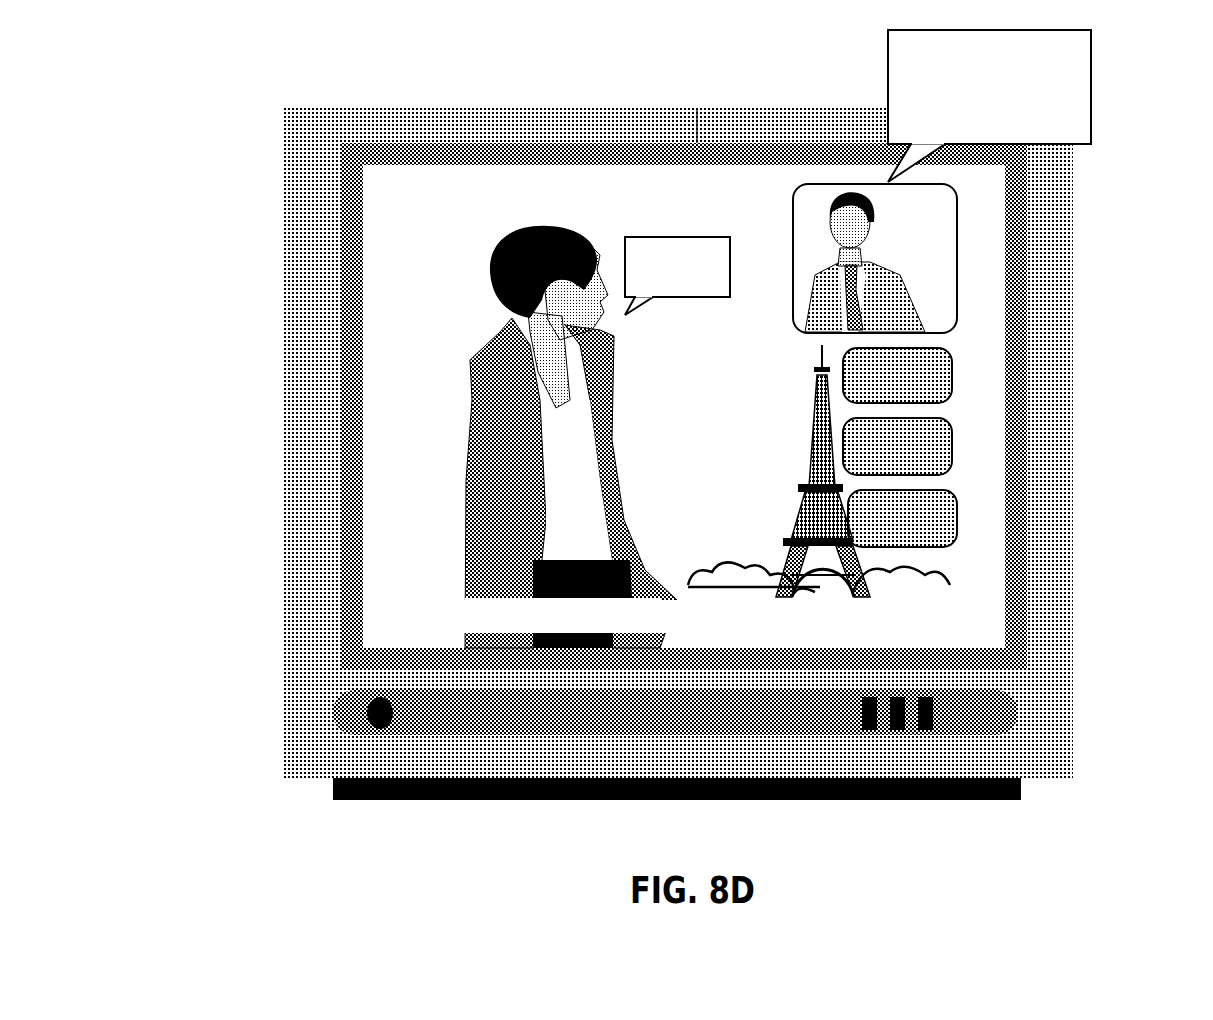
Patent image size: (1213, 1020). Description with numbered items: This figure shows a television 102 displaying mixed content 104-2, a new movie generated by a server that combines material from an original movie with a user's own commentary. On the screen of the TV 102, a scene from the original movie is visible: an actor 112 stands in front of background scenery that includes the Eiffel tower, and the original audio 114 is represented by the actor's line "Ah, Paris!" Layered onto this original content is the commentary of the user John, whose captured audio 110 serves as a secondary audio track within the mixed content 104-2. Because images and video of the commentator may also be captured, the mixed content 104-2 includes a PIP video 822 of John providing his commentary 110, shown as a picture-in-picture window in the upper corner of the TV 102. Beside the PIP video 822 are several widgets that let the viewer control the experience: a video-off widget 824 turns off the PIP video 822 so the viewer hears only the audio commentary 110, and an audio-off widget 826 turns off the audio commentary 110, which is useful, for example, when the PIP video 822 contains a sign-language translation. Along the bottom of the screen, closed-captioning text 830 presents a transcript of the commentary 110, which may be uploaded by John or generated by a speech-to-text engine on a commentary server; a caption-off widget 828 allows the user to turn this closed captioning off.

The television 102 is at (282, 380).
The new movie 104-2 is at (392, 262).
The captured audio 110 is at (1092, 86).
The actor 112 is at (537, 228).
The original audio content 114 is at (640, 237).
The PIP video 822 is at (957, 258).
The video-off widget 824 is at (952, 378).
The audio-off widget 826 is at (952, 447).
The caption-off widget 828 is at (957, 517).
The closed-captioning text 830 is at (958, 612).